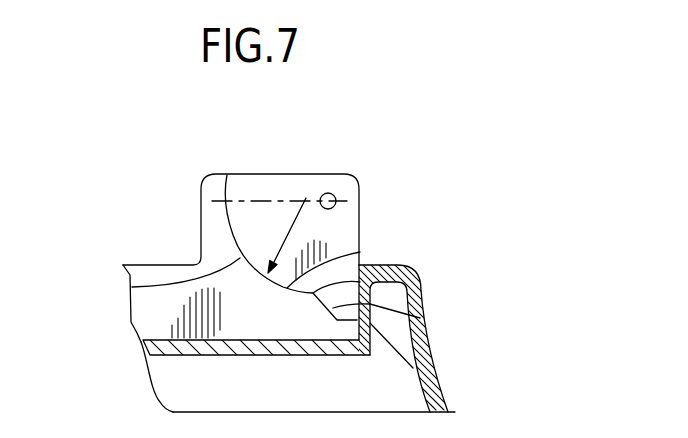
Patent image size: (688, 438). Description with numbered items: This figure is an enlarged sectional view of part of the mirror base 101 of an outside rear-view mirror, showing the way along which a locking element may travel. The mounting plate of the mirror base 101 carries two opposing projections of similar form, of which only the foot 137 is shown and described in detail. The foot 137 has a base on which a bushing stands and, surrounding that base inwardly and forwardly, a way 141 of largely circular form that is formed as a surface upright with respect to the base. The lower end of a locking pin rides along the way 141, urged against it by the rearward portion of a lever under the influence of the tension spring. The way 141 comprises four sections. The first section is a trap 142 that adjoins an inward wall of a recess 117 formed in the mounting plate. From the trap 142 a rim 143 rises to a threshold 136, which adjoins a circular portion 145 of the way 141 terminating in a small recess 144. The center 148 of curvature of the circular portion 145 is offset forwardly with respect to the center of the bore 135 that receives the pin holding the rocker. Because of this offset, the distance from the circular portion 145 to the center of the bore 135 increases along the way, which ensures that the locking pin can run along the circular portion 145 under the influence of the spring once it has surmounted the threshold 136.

The mirror base 101 is at (455, 412).
The recess 117 is at (172, 342).
The bore 135 is at (335, 195).
The threshold 136 is at (421, 292).
The foot projection 137 is at (266, 173).
The way 141 is at (132, 287).
The trap 142 is at (388, 337).
The rim 143 is at (420, 318).
The small recess 144 is at (223, 218).
The circular portion 145 is at (360, 252).
The center of curvature 148 is at (306, 196).